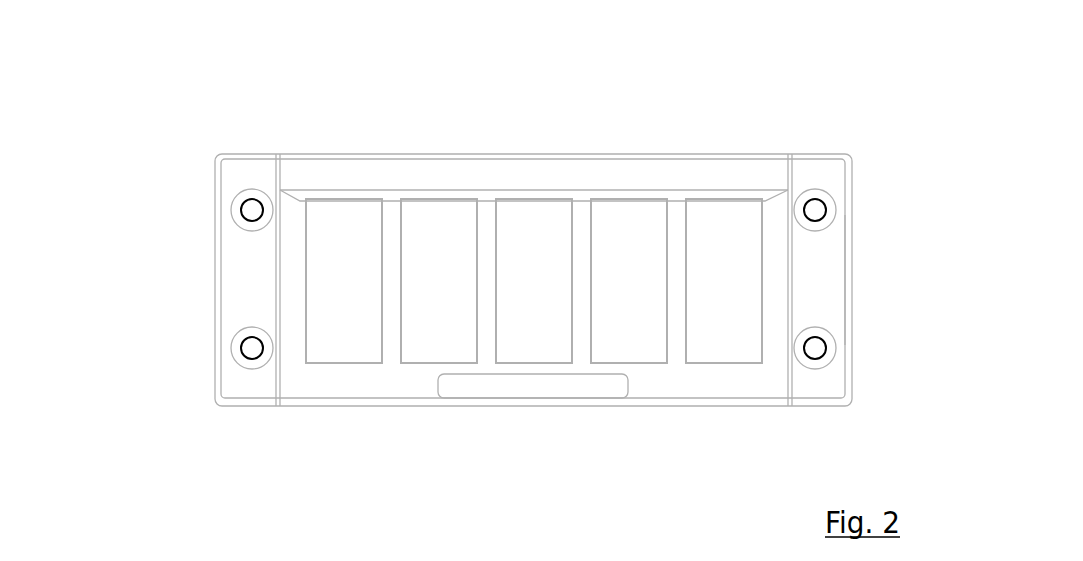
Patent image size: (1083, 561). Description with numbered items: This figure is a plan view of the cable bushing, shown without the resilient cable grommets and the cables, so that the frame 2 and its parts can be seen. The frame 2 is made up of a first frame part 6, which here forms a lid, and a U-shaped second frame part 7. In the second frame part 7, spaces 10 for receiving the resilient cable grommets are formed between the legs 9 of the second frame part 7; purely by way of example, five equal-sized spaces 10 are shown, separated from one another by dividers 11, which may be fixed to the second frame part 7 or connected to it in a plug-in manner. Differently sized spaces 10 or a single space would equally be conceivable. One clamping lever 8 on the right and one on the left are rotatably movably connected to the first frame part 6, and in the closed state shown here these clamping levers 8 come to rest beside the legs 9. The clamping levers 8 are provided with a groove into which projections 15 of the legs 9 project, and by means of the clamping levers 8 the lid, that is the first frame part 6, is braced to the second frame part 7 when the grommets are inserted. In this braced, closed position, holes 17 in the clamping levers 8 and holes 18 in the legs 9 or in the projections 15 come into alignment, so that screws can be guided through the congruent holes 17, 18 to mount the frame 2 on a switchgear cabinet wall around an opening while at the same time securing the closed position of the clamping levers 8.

The frame 2 is at (507, 220).
The first frame part 6 is at (530, 157).
The second frame part 7 is at (450, 395).
The clamping lever 8 is at (230, 283).
The leg 9 is at (293, 283).
The space 10 is at (333, 270).
The divider 11 is at (514, 340).
The projection 15 is at (800, 287).
The hole 17 is at (250, 208).
The hole 18 is at (815, 207).